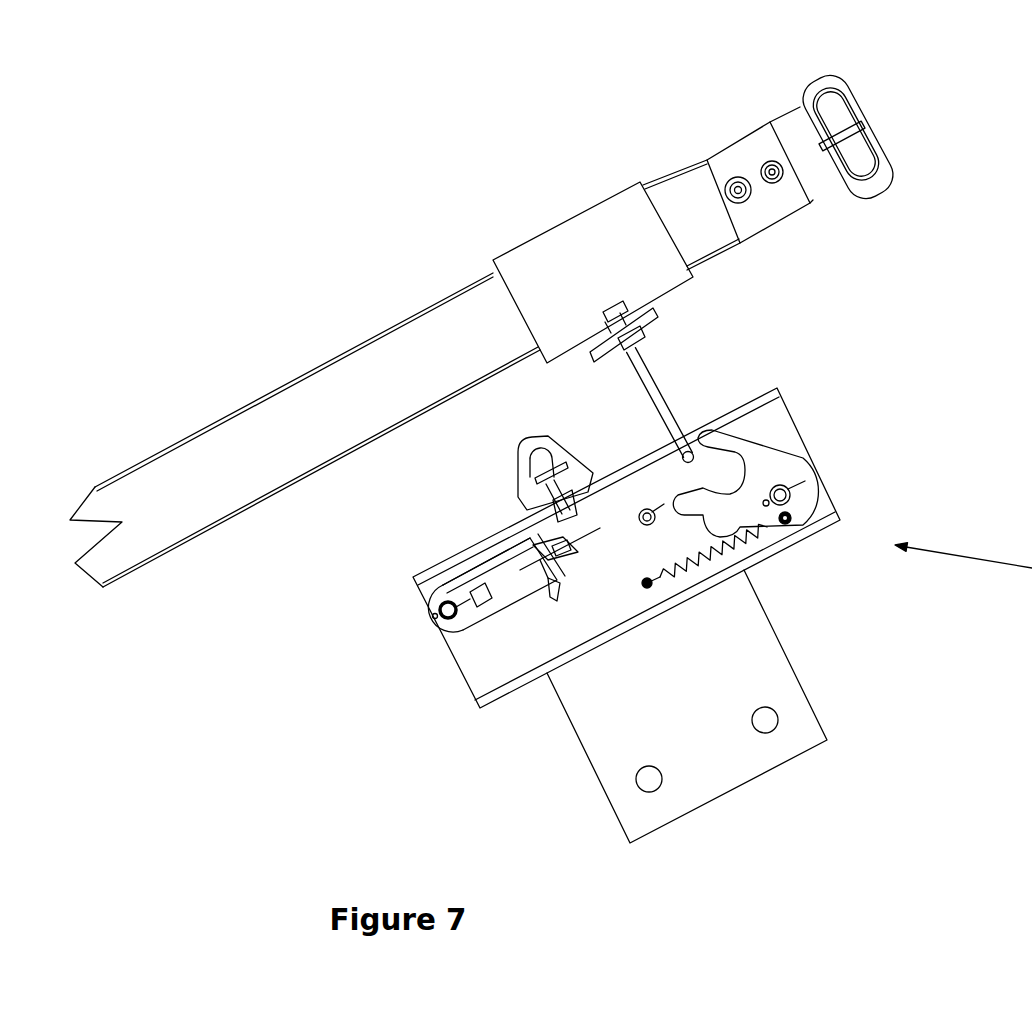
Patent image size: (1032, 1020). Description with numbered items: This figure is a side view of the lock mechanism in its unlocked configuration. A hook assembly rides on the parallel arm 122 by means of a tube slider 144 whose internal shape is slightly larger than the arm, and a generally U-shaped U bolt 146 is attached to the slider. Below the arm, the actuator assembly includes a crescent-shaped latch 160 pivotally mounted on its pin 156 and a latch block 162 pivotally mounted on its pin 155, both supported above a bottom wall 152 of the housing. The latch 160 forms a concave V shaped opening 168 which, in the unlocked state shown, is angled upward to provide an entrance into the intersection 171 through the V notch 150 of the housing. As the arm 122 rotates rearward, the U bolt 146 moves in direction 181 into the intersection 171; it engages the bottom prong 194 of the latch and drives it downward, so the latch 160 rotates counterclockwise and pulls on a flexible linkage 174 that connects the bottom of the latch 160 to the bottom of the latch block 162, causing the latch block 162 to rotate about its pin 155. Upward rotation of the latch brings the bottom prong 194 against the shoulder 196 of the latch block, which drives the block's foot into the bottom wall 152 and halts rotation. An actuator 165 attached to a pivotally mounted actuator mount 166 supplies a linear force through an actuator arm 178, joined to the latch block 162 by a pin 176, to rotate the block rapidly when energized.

The parallel arm 122 is at (388, 366).
The tube slider 144 is at (544, 258).
The U bolt 146 is at (658, 386).
The V notch of the housing 150 is at (661, 462).
The bottom wall of the housing 152 is at (755, 568).
The pin 155 is at (640, 510).
The pin 156 is at (791, 492).
The latch 160 is at (773, 464).
The latch block 162 is at (597, 580).
The actuator 165 is at (497, 590).
The actuator mount 166 is at (453, 583).
The V shaped opening 168 is at (707, 453).
The intersection 171 is at (720, 482).
The flexible linkage 174 is at (752, 524).
The pin 176 is at (550, 547).
The actuator arm 178 is at (543, 550).
The direction 181 is at (757, 285).
The bottom prong 194 is at (705, 508).
The shoulder 196 is at (683, 552).